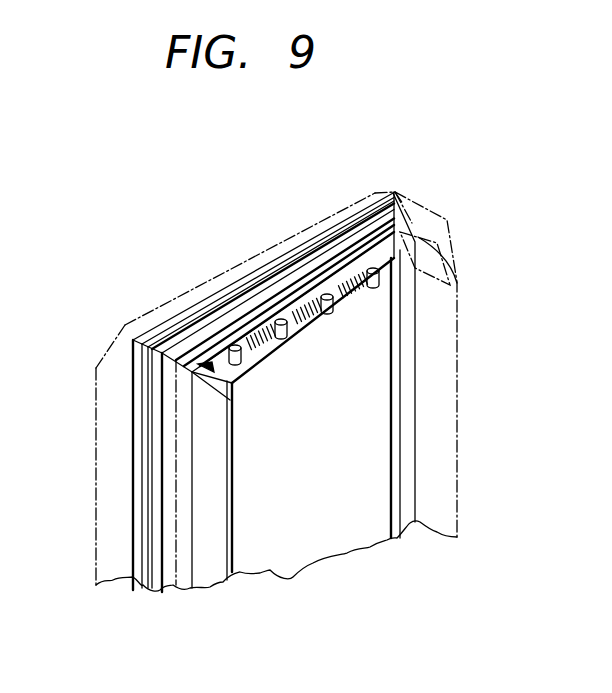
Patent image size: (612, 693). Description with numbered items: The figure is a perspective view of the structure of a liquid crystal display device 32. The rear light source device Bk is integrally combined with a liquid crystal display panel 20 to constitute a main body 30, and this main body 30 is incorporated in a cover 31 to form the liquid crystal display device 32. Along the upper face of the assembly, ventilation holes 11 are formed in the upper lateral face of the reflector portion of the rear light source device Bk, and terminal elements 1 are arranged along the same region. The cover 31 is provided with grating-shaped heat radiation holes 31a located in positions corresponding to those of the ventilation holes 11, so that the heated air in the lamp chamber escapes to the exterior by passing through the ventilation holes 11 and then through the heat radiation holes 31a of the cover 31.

The rear light source device Bk is at (212, 592).
The liquid crystal display panel 20 is at (130, 547).
The main body 30 is at (298, 250).
The terminal pins 1 is at (373, 268).
The ventilation holes 11 is at (255, 330).
The cover 31 is at (165, 312).
The heat radiation holes 31a is at (433, 293).
The liquid crystal display device 32 is at (142, 202).